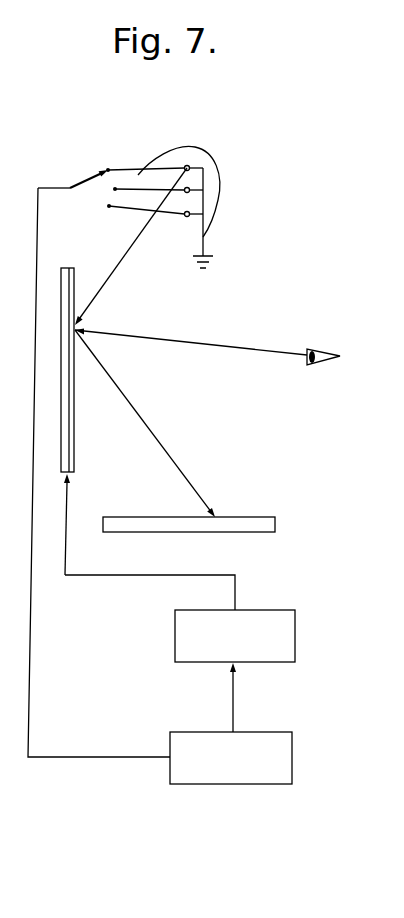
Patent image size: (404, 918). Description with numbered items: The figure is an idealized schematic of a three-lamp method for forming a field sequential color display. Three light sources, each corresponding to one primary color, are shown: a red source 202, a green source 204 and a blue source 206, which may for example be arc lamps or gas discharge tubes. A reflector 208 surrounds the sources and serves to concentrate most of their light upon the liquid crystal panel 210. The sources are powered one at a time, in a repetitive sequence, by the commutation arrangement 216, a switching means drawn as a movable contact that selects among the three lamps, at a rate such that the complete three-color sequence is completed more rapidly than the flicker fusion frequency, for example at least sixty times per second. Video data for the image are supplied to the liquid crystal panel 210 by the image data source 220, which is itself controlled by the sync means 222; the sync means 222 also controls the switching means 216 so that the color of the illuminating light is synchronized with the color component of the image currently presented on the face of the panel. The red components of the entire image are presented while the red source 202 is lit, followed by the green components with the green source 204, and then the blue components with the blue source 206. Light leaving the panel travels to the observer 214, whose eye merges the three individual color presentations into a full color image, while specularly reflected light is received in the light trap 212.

The red source 202 is at (189, 166).
The green source 204 is at (190, 190).
The blue source 206 is at (190, 215).
The reflector 208 is at (165, 157).
The liquid crystal panel 210 is at (74, 450).
The light trap 212 is at (262, 517).
The observer 214 is at (323, 351).
The commutation arrangement 216 is at (70, 186).
The image data source 220 is at (290, 618).
The sync means 222 is at (288, 739).